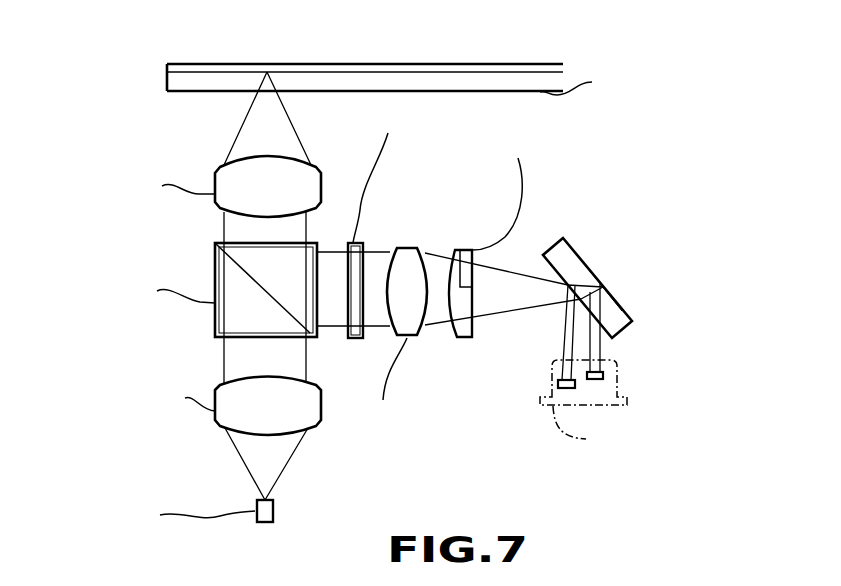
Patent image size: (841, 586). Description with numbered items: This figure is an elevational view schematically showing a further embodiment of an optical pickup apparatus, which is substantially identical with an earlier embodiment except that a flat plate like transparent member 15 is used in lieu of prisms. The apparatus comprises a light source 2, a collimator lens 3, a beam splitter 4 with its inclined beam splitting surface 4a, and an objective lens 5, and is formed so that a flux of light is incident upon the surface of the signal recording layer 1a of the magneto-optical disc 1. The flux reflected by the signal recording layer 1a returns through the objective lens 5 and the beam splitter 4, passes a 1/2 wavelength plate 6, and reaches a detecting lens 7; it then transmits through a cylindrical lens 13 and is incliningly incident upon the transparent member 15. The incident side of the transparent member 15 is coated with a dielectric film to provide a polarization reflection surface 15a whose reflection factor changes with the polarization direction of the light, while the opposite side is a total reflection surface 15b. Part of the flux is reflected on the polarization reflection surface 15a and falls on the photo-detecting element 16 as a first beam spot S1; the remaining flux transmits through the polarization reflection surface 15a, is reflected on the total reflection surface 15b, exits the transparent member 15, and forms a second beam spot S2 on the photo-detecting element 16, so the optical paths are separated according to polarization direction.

The magneto-optical disc 1 is at (508, 65).
The signal recording layer 1a is at (436, 64).
The light source 2 is at (275, 510).
The collimator lens 3 is at (307, 410).
The beam splitter 4 is at (318, 242).
The beam splitting surface 4a is at (293, 320).
The objective lens 5 is at (308, 187).
The 1/2 wavelength plate 6 is at (355, 243).
The detecting lens 7 is at (410, 258).
The cylindrical lens 13 is at (463, 251).
The flat plate like transparent member 15 is at (627, 304).
The polarization reflection surface 15a is at (546, 264).
The total reflection surface 15b is at (586, 262).
The photo-detecting element 16 is at (622, 378).
The first beam spot S1 is at (558, 382).
The second beam spot S2 is at (602, 370).